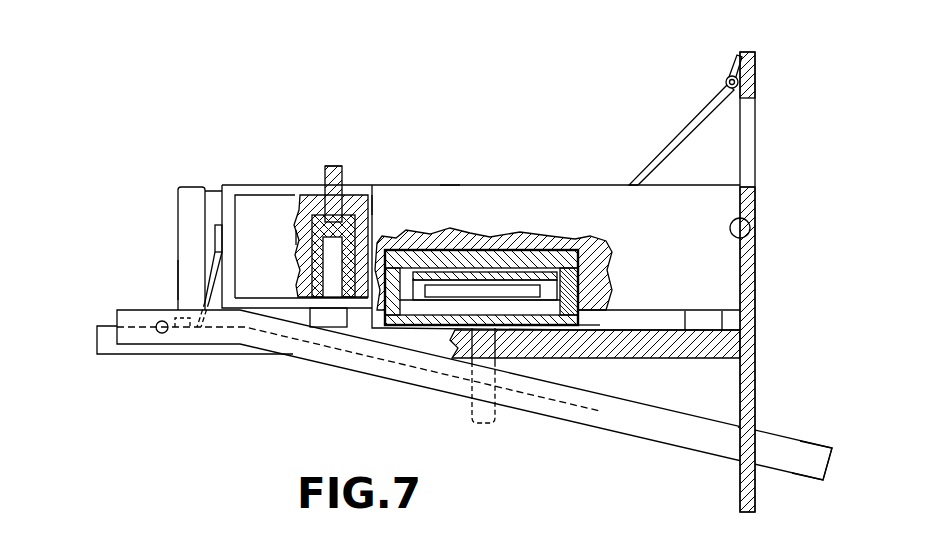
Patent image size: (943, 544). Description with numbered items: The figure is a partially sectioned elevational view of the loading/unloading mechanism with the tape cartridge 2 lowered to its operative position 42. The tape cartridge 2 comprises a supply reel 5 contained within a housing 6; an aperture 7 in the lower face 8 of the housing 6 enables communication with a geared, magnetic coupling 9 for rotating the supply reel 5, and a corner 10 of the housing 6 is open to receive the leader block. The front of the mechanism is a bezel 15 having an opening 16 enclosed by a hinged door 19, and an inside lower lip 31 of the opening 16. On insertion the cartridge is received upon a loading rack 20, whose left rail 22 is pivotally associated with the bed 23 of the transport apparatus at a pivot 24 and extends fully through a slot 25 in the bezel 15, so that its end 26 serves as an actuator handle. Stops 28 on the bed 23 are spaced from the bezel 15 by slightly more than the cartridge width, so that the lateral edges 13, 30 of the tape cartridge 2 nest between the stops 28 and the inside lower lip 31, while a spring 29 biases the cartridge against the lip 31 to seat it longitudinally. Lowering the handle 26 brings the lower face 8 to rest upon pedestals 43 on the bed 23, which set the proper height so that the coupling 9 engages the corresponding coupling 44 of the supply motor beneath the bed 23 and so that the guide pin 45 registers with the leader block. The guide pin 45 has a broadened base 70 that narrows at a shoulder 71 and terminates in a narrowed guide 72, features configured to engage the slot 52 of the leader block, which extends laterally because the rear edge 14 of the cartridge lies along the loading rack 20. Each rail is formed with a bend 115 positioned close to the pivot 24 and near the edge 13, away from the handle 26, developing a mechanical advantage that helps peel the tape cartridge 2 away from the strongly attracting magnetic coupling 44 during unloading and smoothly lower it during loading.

The tape cartridge 2 is at (527, 248).
The supply reel 5 is at (480, 244).
The housing 6 is at (445, 202).
The aperture 7 is at (596, 322).
The lower face 8 is at (637, 315).
The coupling 9 is at (545, 270).
The corner 10 is at (246, 200).
The lateral edge 13 is at (180, 198).
The rear edge 14 is at (388, 205).
The bezel 15 is at (757, 78).
The opening 16 is at (757, 134).
The hinged door 19 is at (676, 116).
The loading rack 20 is at (440, 376).
The left rail 22 is at (512, 394).
The bed 23 is at (203, 354).
The pivot 24 is at (158, 334).
The slot 25 is at (752, 430).
The end 26 is at (795, 445).
The stops 28 is at (180, 278).
The spring 29 is at (214, 240).
The lateral edge 30 is at (745, 205).
The inside lower lip 31 is at (752, 226).
The operative position 42 is at (400, 134).
The pedestals 43 is at (326, 325).
The coupling 44 is at (558, 333).
The guide pin 45 is at (316, 176).
The slot 52 is at (298, 238).
The broadened base 70 is at (312, 260).
The shoulder 71 is at (360, 214).
The narrowed guide 72 is at (334, 166).
The bend 115 is at (248, 340).